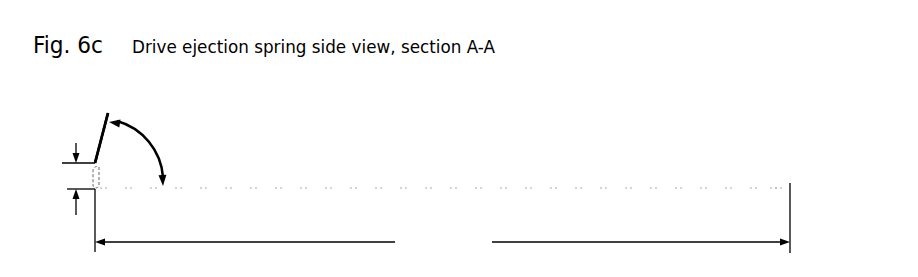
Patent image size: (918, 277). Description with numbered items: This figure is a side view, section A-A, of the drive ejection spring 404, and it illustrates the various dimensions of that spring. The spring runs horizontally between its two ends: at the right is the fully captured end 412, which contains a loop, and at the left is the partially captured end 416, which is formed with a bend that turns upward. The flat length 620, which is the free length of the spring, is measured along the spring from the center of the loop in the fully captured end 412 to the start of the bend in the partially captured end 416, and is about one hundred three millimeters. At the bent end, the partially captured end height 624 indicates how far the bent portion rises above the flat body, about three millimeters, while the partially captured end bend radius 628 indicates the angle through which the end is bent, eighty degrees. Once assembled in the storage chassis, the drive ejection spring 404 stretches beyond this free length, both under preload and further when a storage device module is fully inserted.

The drive ejection spring 404 is at (750, 123).
The fully captured end 412 is at (812, 190).
The partially captured end 416 is at (97, 180).
The flat length 620 is at (442, 218).
The partially captured end height 624 is at (77, 142).
The partially captured end bend radius 628 is at (150, 146).